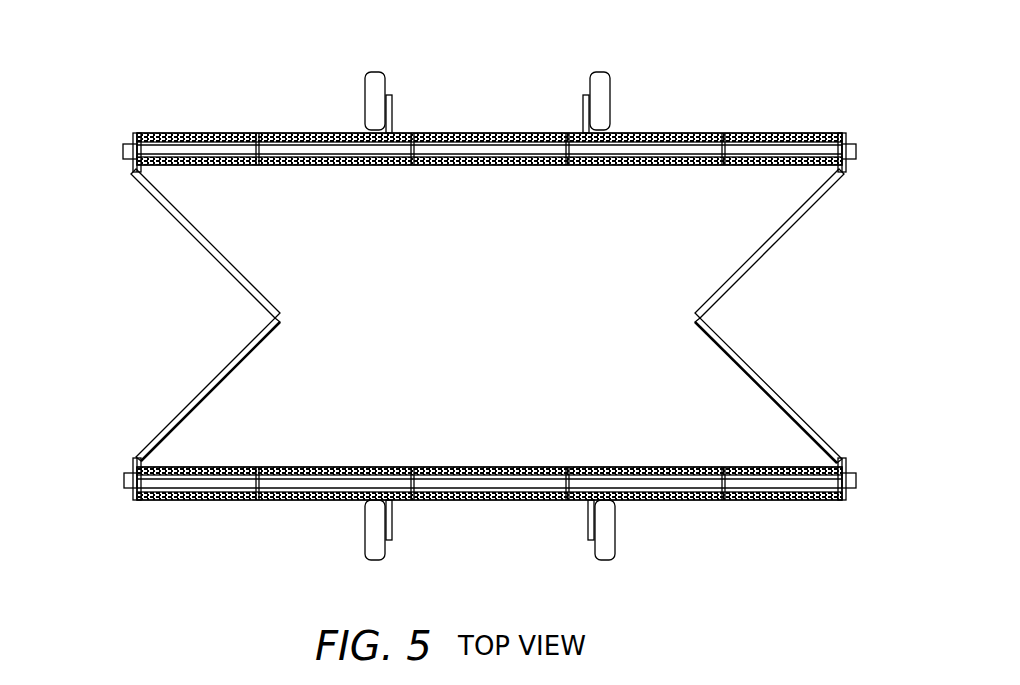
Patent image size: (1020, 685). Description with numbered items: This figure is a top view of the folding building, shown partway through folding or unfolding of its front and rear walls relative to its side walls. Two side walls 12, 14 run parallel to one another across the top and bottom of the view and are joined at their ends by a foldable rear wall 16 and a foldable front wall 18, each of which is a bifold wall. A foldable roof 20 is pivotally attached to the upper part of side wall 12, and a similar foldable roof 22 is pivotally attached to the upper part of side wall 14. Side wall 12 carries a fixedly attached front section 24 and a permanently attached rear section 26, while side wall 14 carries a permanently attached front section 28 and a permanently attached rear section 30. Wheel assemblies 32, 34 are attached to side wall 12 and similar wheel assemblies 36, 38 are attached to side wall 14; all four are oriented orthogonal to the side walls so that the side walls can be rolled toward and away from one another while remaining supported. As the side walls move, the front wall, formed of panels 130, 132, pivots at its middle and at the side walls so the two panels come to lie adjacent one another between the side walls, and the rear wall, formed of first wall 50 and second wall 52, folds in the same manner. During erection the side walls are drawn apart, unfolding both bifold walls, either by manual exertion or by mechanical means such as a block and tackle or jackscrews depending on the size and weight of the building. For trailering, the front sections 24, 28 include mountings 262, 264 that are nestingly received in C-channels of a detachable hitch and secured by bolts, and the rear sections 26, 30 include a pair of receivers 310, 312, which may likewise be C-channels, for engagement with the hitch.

The side wall 12 is at (489, 484).
The side wall 14 is at (489, 124).
The foldable rear wall 16 is at (205, 315).
The foldable front wall 18 is at (780, 316).
The foldable roof 20 is at (440, 464).
The foldable roof 22 is at (478, 170).
The front section 24 is at (852, 463).
The rear section 26 is at (134, 462).
The front section 28 is at (848, 160).
The rear section 30 is at (131, 166).
The wheel assembly 32 is at (591, 541).
The wheel assembly 34 is at (389, 541).
The wheel assembly 36 is at (584, 96).
The wheel assembly 38 is at (393, 96).
The first wall 50 is at (190, 398).
The second wall 52 is at (216, 262).
The panel 130 is at (787, 395).
The panel 132 is at (787, 236).
The mounting 262 is at (858, 483).
The mounting 264 is at (856, 146).
The receiver 310 is at (124, 481).
The receiver 312 is at (122, 150).